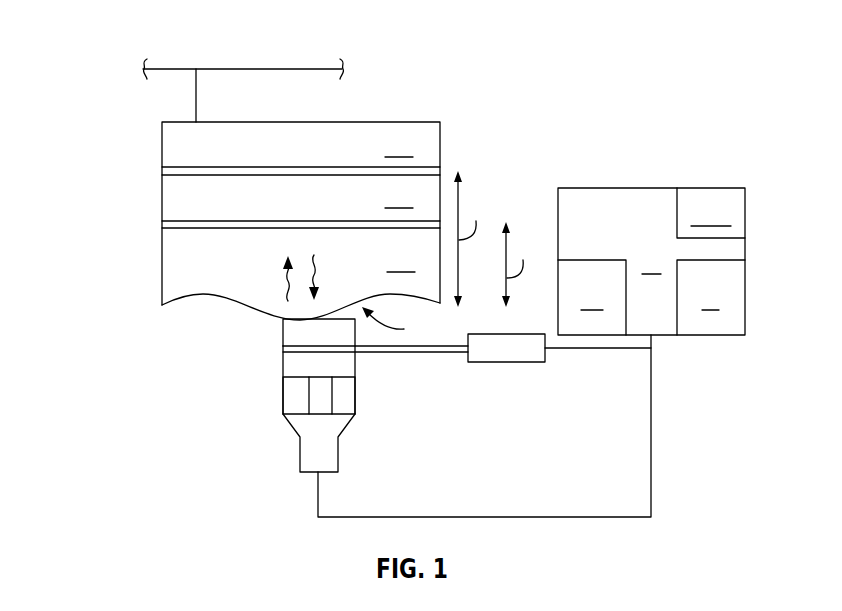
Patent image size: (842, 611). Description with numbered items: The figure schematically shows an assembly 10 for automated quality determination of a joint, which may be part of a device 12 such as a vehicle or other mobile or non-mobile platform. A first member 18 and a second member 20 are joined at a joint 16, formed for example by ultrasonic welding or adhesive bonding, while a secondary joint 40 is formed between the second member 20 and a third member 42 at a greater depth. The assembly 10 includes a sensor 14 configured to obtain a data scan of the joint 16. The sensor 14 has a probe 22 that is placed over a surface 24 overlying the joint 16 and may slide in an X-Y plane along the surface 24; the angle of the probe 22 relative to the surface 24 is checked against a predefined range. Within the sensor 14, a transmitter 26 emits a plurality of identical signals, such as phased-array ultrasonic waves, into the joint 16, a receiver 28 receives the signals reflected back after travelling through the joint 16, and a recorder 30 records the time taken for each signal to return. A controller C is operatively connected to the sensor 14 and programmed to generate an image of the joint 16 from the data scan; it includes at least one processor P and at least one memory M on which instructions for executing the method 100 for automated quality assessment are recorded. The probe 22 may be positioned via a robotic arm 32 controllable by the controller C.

The assembly 10 is at (582, 81).
The device 12 is at (182, 68).
The sensor 14 is at (343, 441).
The joint 16 is at (156, 221).
The first member 18 is at (280, 287).
The second member 20 is at (301, 198).
The probe 22 is at (293, 335).
The surface 24 is at (176, 303).
The transmitter 26 is at (290, 391).
The receiver 28 is at (313, 396).
The recorder 30 is at (348, 391).
The robotic arm 32 is at (523, 363).
The secondary joint 40 is at (156, 172).
The third member 42 is at (301, 144).
The method 100 is at (651, 261).
The controller C is at (651, 261).
The memory M is at (592, 297).
The processor P is at (711, 297).